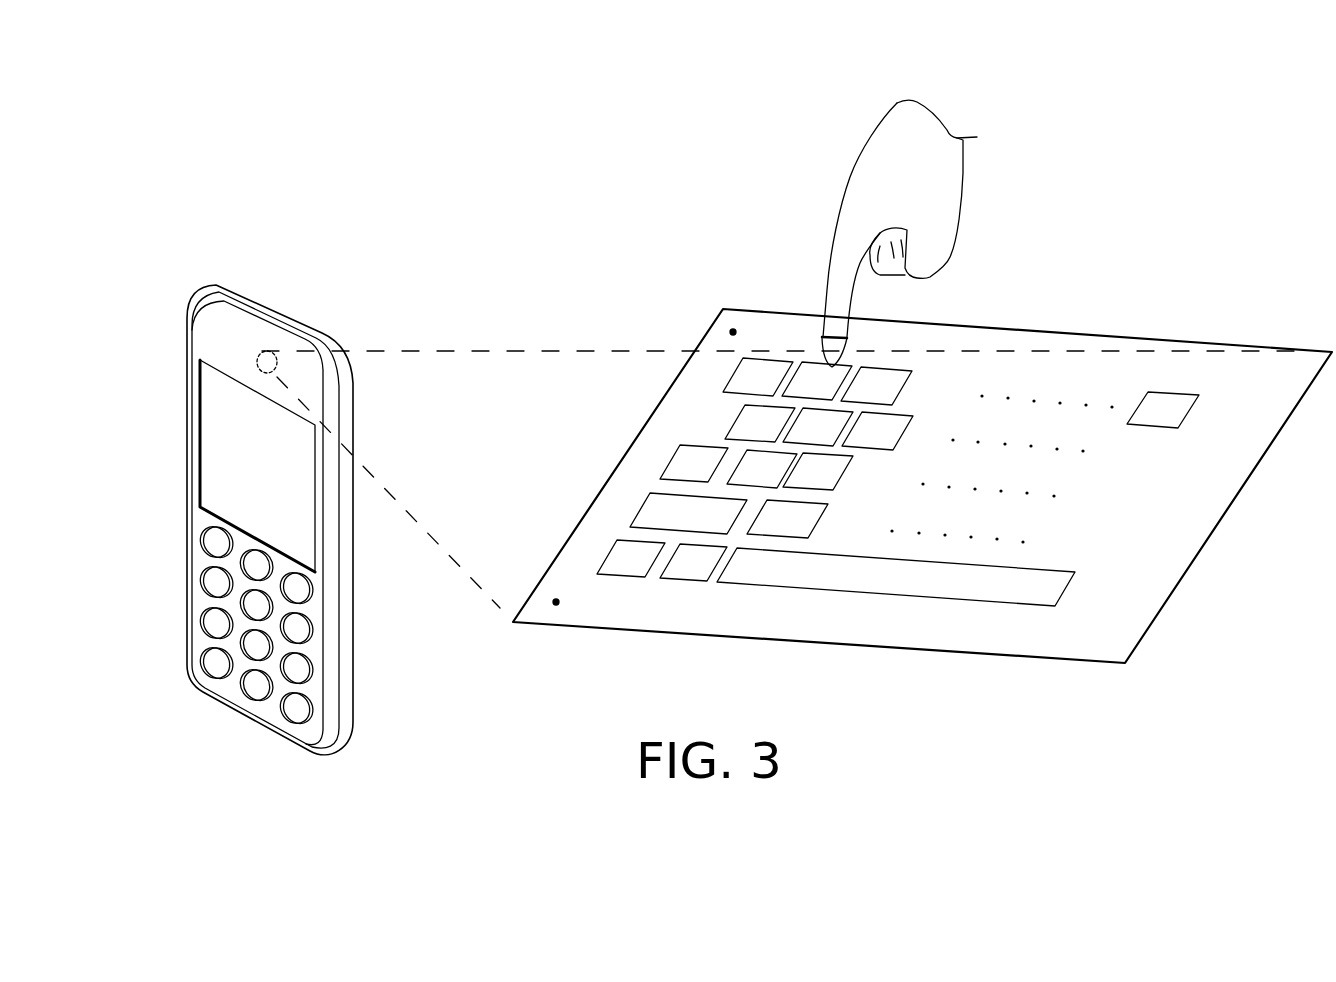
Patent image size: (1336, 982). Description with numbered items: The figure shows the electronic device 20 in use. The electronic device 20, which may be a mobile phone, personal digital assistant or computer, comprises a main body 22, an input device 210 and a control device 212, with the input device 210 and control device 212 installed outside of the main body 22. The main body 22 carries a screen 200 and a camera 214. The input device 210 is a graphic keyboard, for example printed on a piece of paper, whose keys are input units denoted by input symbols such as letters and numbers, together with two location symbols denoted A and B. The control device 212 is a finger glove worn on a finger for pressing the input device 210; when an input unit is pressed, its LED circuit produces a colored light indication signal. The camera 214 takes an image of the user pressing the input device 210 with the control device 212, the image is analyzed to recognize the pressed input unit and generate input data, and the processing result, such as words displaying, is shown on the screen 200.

The electronic device 20 is at (612, 128).
The main body 22 is at (216, 286).
The screen 200 is at (208, 382).
The input device 210 is at (1135, 597).
The control device 212 is at (817, 340).
The camera 214 is at (265, 350).